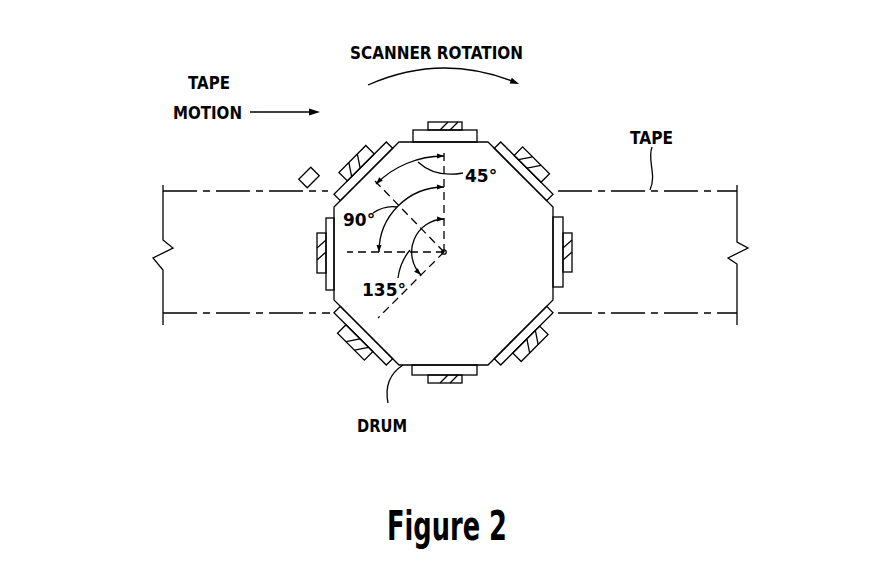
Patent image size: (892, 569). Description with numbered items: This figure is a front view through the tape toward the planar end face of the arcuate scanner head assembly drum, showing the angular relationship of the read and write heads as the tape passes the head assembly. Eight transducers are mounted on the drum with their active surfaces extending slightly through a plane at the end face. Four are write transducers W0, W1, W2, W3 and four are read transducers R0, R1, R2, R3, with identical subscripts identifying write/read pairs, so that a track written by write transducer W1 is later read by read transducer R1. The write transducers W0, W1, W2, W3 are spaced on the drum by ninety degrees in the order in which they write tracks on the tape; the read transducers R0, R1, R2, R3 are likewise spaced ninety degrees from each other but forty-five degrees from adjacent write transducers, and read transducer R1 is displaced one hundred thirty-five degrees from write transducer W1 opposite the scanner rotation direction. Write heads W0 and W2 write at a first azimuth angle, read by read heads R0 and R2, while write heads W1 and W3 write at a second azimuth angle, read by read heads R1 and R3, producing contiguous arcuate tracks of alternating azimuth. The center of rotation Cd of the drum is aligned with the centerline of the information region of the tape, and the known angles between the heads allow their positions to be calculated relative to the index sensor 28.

The index sensor 28 is at (299, 178).
The write transducer W0 is at (445, 122).
The write transducer W1 is at (317, 268).
The write transducer W2 is at (453, 383).
The write transducer W3 is at (572, 262).
The read transducer R0 is at (346, 336).
The read transducer R1 is at (534, 351).
The read transducer R2 is at (524, 149).
The read transducer R3 is at (370, 152).
The center of rotation Cd is at (447, 255).